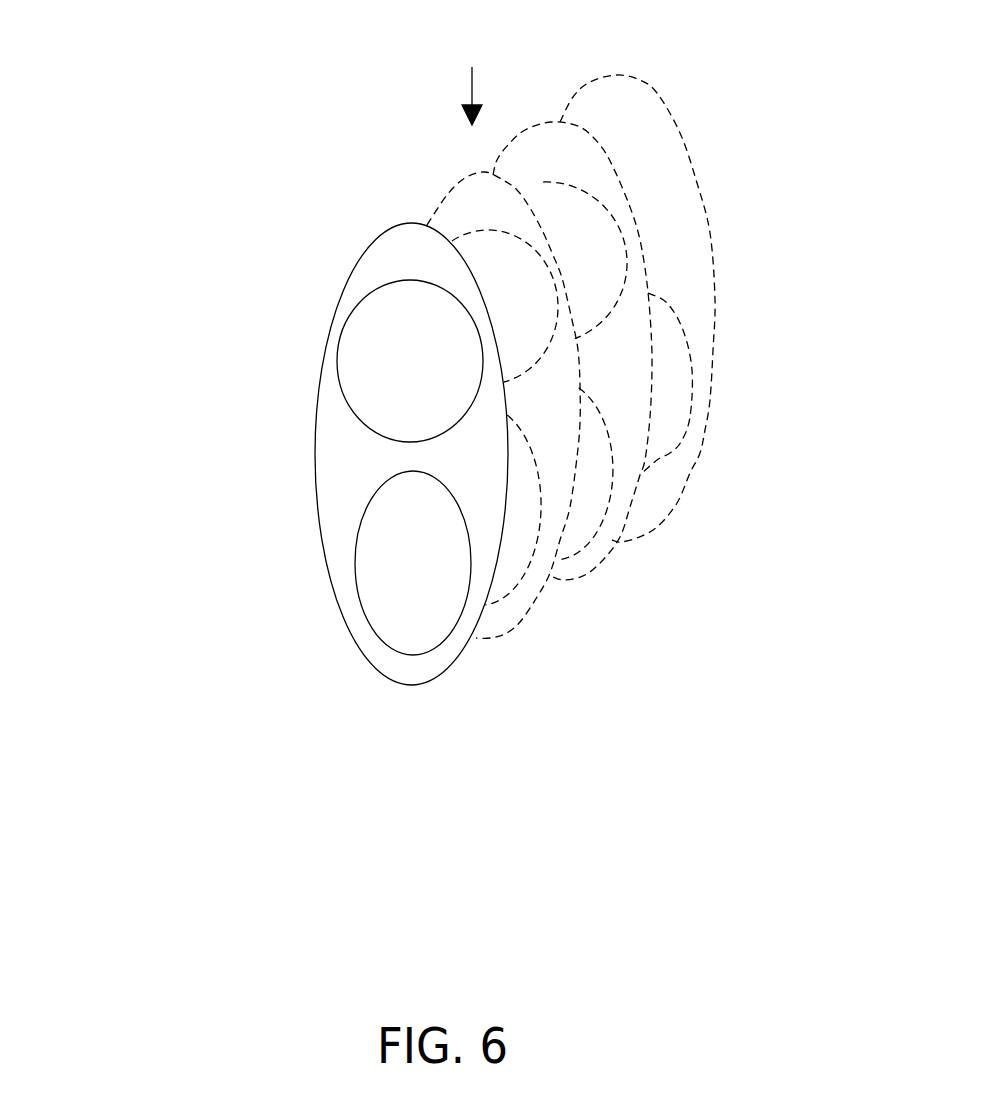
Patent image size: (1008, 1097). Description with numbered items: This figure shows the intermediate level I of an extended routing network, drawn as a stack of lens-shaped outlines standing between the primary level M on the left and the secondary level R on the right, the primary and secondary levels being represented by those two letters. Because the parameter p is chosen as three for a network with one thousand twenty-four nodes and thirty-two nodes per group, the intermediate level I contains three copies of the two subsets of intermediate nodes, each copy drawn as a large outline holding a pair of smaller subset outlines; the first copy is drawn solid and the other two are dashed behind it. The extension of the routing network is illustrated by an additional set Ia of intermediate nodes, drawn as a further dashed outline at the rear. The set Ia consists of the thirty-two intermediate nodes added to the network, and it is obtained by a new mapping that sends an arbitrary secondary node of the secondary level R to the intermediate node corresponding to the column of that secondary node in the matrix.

The intermediate level I is at (468, 42).
The additional set of intermediate nodes Ia is at (680, 442).
The primary level M is at (59, 379).
The secondary level R is at (898, 371).